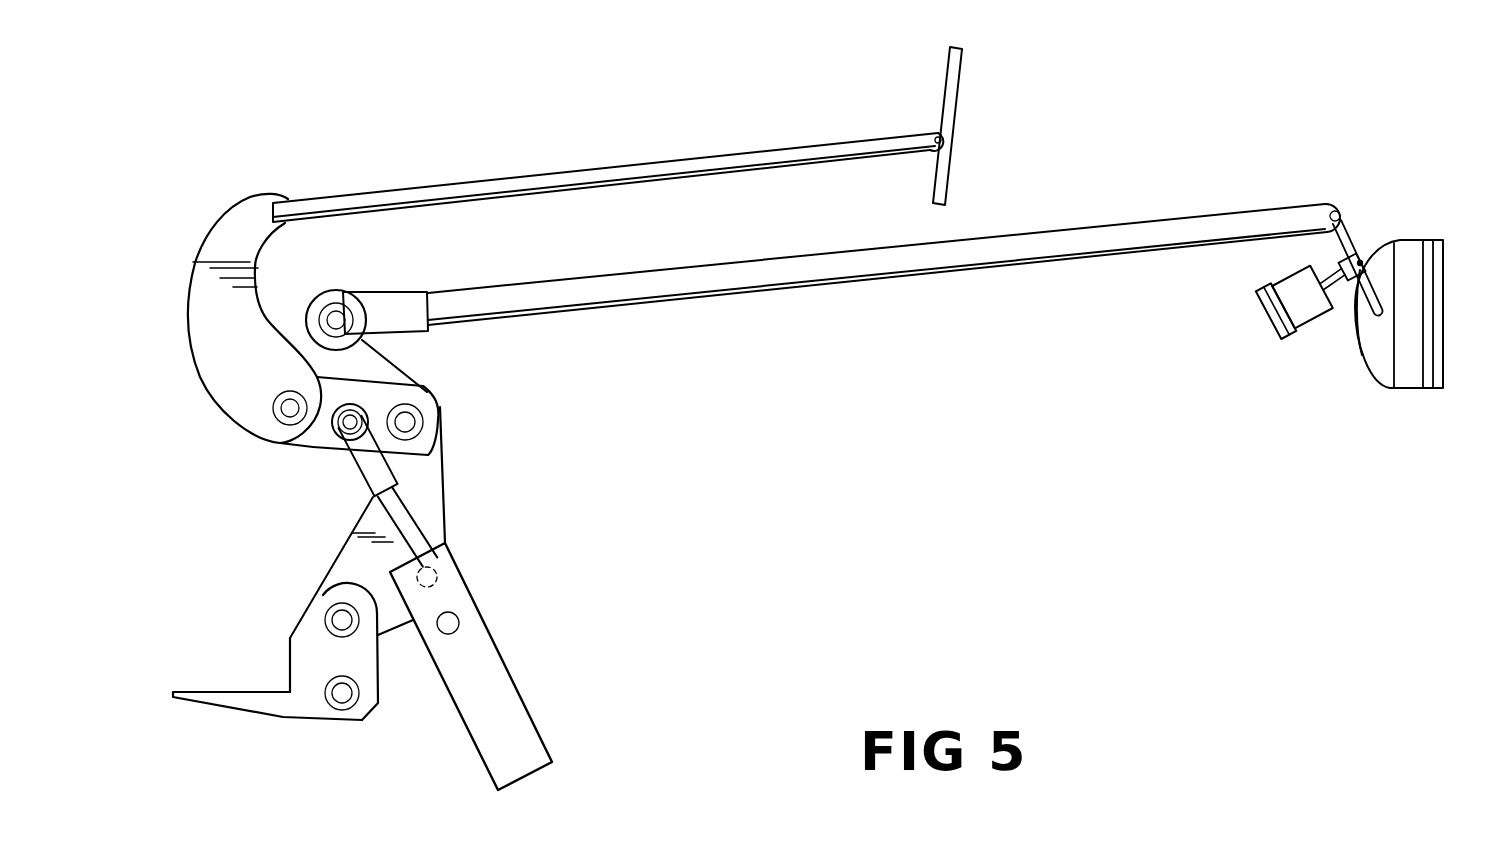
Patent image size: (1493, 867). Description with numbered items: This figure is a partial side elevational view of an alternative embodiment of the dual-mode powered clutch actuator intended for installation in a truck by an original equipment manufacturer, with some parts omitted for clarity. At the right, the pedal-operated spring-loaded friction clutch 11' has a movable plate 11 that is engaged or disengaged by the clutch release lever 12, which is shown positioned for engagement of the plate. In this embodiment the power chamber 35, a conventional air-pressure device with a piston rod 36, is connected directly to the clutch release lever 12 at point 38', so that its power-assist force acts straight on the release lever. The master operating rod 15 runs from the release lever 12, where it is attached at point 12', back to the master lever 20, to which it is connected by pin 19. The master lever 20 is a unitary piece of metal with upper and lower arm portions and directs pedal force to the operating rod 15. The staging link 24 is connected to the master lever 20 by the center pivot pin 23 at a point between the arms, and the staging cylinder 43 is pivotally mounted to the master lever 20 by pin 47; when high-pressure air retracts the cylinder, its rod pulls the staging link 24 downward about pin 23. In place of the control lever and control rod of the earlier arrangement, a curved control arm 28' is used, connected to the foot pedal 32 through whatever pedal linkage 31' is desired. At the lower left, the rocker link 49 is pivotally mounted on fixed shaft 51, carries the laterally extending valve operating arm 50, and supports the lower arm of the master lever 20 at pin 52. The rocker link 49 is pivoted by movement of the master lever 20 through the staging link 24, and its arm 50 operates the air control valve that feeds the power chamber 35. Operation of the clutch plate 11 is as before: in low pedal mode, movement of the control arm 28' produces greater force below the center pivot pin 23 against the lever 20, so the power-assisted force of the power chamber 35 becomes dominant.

The movable plate 11 is at (1399, 337).
The pedal-operated spring-loaded friction clutch 11' is at (1373, 347).
The clutch release lever 12 is at (1363, 251).
The connection point 12' is at (1335, 190).
The master operating rod 15 is at (707, 270).
The pin 19 is at (338, 314).
The master lever 20 is at (445, 492).
The pin 23 is at (425, 417).
The staging link 24 is at (432, 428).
The curved control arm 28' is at (227, 320).
The pedal linkage 31' is at (608, 168).
The pedal 32 is at (955, 76).
The power chamber 35 is at (1307, 330).
The piston rod 36 is at (1318, 276).
The connection point 38' is at (1376, 253).
The staging cylinder 43 is at (518, 698).
The pin 47 is at (438, 578).
The rocker link 49 is at (290, 660).
The valve operating arm 50 is at (215, 688).
The fixed shaft 51 is at (349, 698).
The pin 52 is at (335, 618).